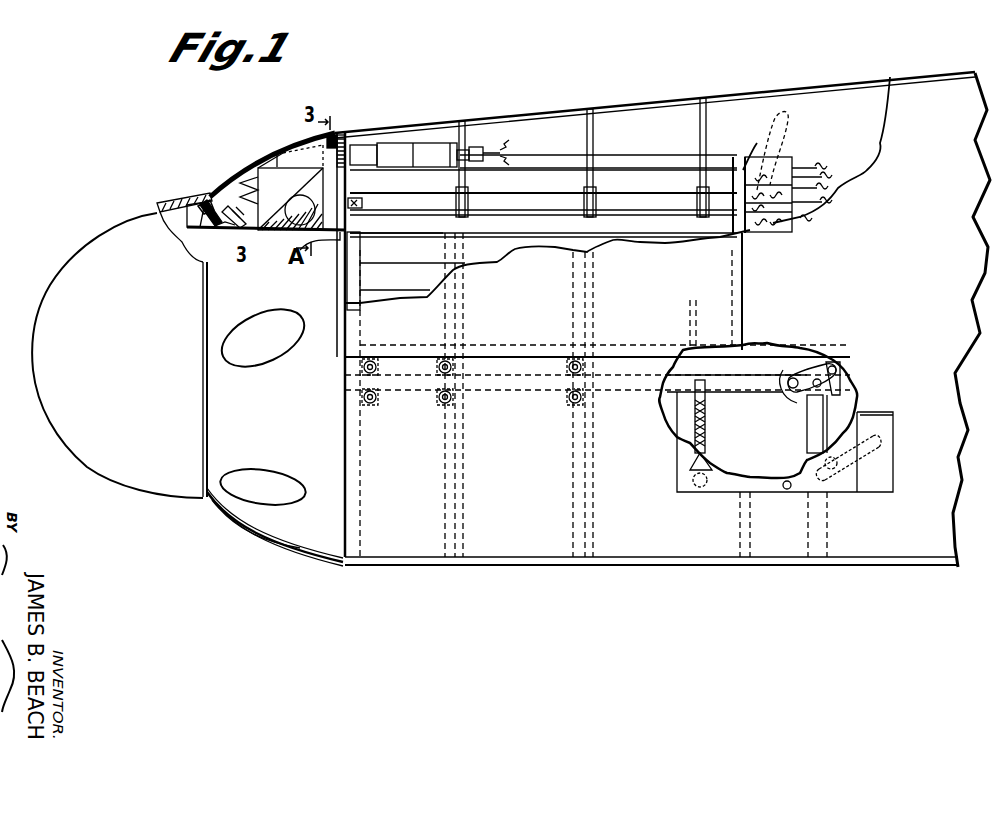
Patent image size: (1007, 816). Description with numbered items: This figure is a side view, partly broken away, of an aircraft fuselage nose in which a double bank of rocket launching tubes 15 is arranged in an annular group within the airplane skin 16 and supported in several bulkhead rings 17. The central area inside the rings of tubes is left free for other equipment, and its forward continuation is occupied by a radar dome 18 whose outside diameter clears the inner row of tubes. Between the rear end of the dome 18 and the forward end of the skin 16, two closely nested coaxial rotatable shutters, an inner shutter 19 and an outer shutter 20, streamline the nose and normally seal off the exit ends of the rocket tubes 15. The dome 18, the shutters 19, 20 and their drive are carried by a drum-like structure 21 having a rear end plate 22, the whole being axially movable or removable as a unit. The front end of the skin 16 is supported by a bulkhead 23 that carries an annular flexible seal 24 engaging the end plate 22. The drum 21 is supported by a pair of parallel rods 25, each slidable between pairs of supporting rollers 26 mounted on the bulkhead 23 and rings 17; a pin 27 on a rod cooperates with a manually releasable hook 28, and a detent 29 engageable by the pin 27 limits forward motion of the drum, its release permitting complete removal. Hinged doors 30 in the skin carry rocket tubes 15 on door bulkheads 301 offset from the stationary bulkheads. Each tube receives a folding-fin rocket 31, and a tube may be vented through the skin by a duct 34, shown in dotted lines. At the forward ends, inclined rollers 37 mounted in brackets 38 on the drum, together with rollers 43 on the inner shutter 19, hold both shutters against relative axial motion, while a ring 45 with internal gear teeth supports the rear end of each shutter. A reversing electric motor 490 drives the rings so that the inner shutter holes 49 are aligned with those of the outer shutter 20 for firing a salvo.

The rocket launching tubes 15 is at (638, 182).
The airplane skin 16 is at (485, 115).
The bulkhead rings 17 is at (575, 120).
The radar dome 18 is at (124, 360).
The inner shutter 19 is at (290, 172).
The outer shutter 20 is at (249, 182).
The drum-like structure 21 is at (283, 231).
The rear end plate 22 is at (336, 278).
The bulkhead 23 is at (351, 184).
The annular flexible seal 24 is at (352, 212).
The parallel rods 25 is at (737, 387).
The supporting rollers 26 is at (570, 398).
The pin 27 is at (838, 366).
The hook 28 is at (785, 372).
The detent 29 is at (695, 410).
The doors 30 is at (736, 305).
The door bulkheads 301 is at (585, 303).
The folding-fin rockets 31 is at (266, 166).
The ducts 34 is at (780, 127).
The inclined rollers 37 is at (215, 205).
The brackets 38 is at (240, 226).
The rollers 43 is at (208, 205).
The ring 45 is at (337, 133).
The inner shutter holes 49 is at (248, 354).
The reversing electric motor 490 is at (398, 150).